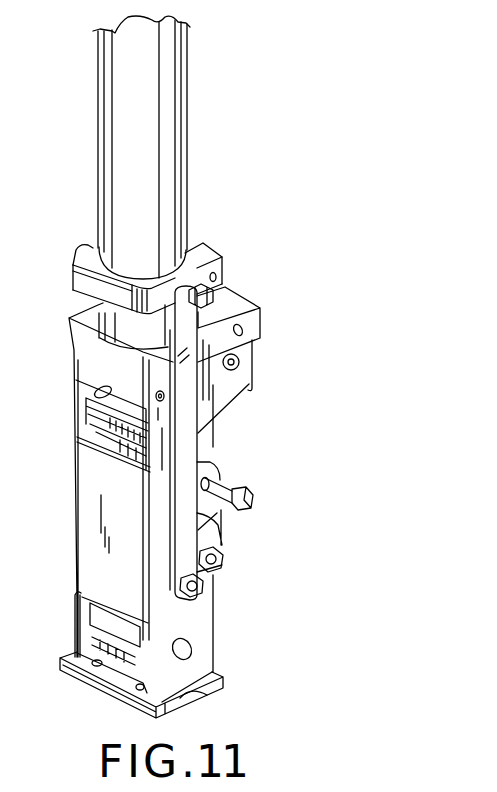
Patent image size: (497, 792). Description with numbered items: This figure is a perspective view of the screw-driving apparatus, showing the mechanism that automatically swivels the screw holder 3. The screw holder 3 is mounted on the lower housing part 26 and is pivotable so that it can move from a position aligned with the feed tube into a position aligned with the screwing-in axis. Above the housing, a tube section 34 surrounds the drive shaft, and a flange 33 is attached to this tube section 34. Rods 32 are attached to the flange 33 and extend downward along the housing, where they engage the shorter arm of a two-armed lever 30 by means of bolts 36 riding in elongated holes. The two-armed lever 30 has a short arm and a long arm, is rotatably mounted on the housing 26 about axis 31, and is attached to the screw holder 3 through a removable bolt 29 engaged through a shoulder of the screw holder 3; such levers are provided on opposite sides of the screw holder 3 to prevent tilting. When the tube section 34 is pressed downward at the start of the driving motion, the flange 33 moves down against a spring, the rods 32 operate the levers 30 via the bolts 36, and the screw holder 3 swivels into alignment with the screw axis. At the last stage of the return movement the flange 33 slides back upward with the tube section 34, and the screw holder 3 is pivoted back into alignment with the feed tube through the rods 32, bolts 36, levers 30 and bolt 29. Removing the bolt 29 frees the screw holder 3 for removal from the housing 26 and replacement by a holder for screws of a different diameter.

The tube section 34 is at (187, 121).
The flange 33 is at (220, 258).
The rods 32 is at (188, 398).
The two-armed lever 30 is at (212, 519).
The bolt 29 is at (223, 473).
The axis 31 is at (223, 562).
The bolts 36 is at (193, 592).
The lower housing part 26 is at (200, 655).
The screw holder 3 is at (92, 621).